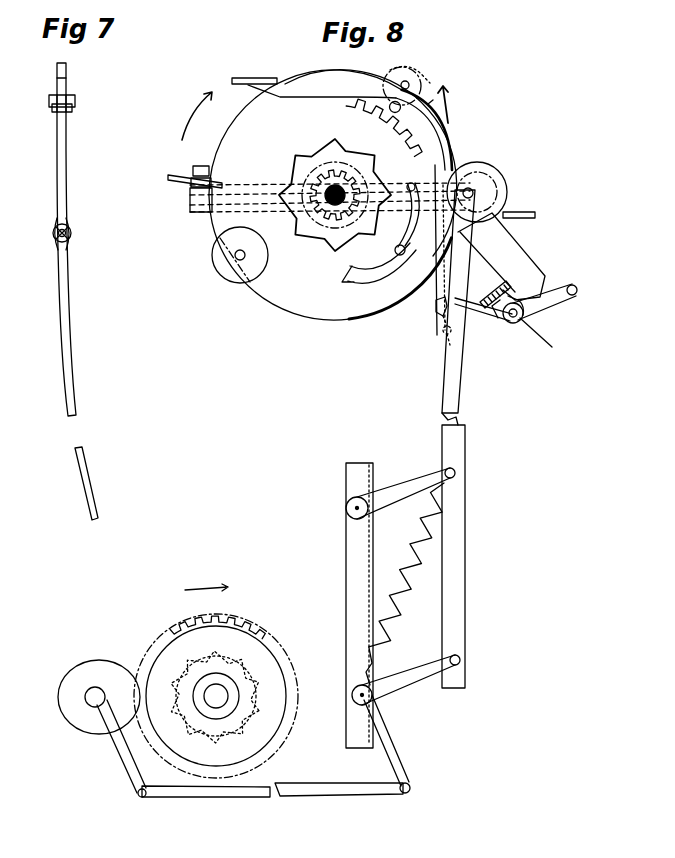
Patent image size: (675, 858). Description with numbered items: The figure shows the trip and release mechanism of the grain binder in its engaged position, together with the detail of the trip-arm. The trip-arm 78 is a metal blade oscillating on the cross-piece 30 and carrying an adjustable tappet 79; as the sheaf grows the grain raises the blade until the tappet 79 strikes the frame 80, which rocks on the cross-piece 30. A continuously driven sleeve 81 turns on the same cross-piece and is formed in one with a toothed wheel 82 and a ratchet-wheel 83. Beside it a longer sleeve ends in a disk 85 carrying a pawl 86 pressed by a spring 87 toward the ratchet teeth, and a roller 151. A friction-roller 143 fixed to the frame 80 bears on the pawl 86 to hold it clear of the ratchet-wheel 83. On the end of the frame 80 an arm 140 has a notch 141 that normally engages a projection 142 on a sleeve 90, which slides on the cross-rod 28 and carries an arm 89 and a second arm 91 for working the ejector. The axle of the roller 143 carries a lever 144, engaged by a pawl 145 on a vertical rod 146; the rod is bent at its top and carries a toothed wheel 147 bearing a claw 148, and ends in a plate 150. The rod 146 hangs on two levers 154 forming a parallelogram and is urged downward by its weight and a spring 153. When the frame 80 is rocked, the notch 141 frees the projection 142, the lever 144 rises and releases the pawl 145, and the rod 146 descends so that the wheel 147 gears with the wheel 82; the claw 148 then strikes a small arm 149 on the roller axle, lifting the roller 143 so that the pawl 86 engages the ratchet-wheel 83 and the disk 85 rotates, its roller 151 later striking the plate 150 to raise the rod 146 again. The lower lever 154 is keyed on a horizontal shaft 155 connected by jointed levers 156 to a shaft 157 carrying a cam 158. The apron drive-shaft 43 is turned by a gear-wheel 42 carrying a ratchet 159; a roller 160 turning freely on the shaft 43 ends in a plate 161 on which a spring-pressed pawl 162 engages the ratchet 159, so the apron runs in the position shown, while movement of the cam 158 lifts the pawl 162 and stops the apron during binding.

In FIG. 7, the trip-arm 78 is at (74, 203).
In FIG. 7, the tappet 79 is at (56, 108).
In FIG. 8, the tappet 79 is at (183, 186).
In FIG. 7, the cross-piece 30 is at (53, 234).
In FIG. 8, the plate 150 is at (255, 72).
In FIG. 8, the disk 85 is at (345, 319).
In FIG. 8, the roller 151 is at (230, 268).
In FIG. 8, the frame 80 is at (205, 212).
In FIG. 8, the wheel 82 is at (300, 161).
In FIG. 8, the ratchet-wheel 83 is at (316, 155).
In FIG. 8, the sleeve 81 is at (342, 191).
In FIG. 8, the spring 87 is at (402, 228).
In FIG. 8, the pawl 86 is at (376, 278).
In FIG. 8, the claw 148 is at (445, 70).
In FIG. 8, the toothed wheel 147 is at (470, 98).
In FIG. 8, the small arm 149 is at (471, 189).
In FIG. 8, the friction-roller 143 is at (485, 190).
In FIG. 8, the vertical rod 146 is at (444, 393).
In FIG. 8, the arm 140 is at (527, 260).
In FIG. 8, the lever 144 is at (462, 246).
In FIG. 8, the notch 141 is at (506, 281).
In FIG. 8, the sleeve 90 is at (515, 324).
In FIG. 8, the second arm 91 is at (550, 300).
In FIG. 8, the projection 142 is at (540, 286).
In FIG. 8, the arm 89 is at (473, 305).
In FIG. 8, the cross-rod 28 is at (546, 337).
In FIG. 8, the pawl 145 is at (441, 317).
In FIG. 8, the horizontal shaft 155 is at (352, 748).
In FIG. 8, the levers 154 is at (390, 500).
In FIG. 8, the spring 153 is at (392, 620).
In FIG. 8, the jointed levers 156 is at (398, 770).
In FIG. 8, the shaft 157 is at (92, 700).
In FIG. 8, the cam 158 is at (62, 698).
In FIG. 8, the plate 161 is at (286, 712).
In FIG. 8, the gear-wheel 42 is at (248, 612).
In FIG. 8, the drive-shaft 43 is at (216, 687).
In FIG. 8, the pawl 162 is at (175, 655).
In FIG. 8, the ratchet 159 is at (222, 745).
In FIG. 8, the roller 160 is at (205, 712).